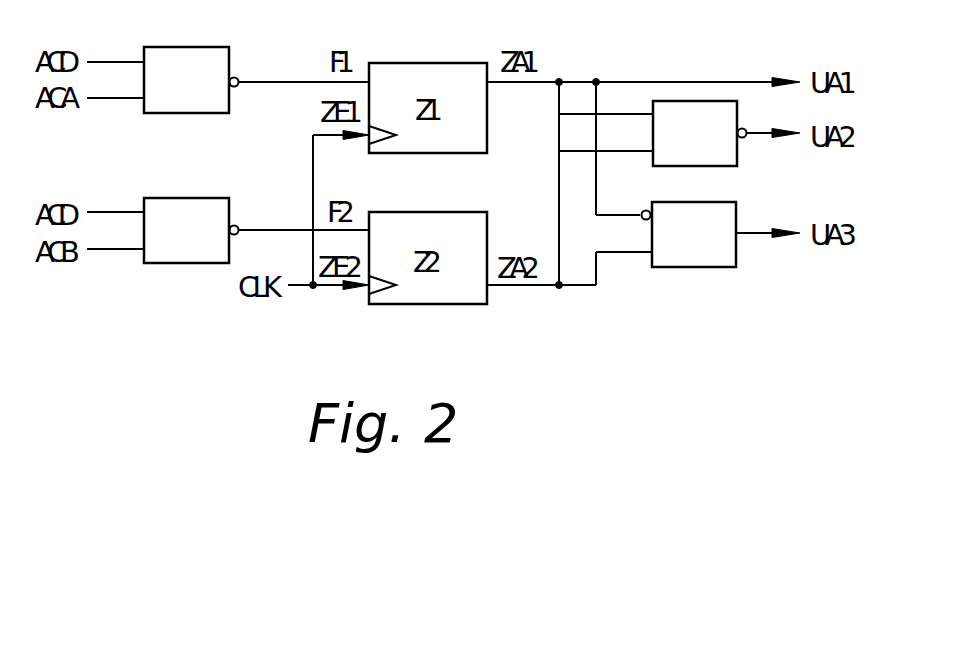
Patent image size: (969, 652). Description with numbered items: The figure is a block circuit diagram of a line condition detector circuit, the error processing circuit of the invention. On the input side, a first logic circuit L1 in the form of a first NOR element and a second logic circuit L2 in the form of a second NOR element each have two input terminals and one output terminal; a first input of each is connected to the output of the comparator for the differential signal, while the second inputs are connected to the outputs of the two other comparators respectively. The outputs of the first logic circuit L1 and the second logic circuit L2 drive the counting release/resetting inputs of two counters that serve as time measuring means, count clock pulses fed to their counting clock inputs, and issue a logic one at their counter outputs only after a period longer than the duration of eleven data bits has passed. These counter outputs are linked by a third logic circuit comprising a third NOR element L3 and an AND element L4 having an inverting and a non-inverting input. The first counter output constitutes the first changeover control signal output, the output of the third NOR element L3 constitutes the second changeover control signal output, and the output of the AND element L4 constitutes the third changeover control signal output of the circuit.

The first logic circuit L1 is at (185, 47).
The second logic circuit L2 is at (185, 198).
The third NOR element L3 is at (693, 101).
The AND element L4 is at (693, 267).